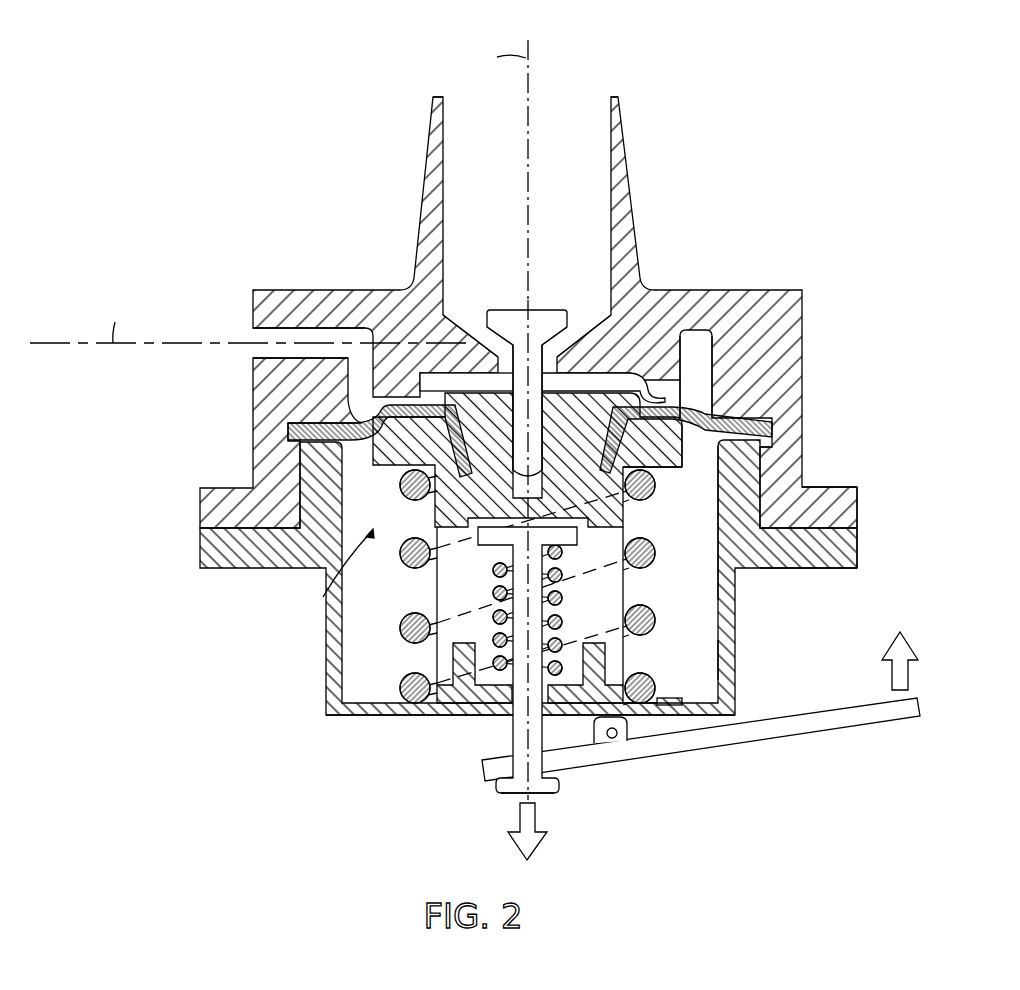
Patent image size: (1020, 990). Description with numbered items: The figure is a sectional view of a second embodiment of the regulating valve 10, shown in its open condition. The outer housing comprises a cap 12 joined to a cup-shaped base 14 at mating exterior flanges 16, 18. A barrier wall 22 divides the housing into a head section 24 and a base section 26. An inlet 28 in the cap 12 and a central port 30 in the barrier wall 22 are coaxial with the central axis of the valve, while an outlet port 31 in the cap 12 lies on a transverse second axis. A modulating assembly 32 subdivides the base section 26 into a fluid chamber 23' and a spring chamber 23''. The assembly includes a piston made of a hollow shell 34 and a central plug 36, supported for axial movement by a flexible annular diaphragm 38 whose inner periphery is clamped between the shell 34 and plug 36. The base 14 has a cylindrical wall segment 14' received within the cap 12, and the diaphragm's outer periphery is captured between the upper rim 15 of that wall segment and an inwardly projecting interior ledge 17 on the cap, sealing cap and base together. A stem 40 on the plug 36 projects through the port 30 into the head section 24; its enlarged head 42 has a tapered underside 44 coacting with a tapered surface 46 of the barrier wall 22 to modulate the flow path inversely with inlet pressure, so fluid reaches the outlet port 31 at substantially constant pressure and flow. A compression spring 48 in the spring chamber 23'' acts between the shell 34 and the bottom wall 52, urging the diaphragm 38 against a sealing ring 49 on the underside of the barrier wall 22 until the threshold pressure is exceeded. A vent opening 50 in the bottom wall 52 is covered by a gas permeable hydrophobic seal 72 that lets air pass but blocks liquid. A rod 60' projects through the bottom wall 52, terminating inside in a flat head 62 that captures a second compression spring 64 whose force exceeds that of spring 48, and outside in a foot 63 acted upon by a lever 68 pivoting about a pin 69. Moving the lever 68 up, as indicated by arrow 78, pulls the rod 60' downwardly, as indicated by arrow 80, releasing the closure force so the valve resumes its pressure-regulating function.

The regulating valve 10 is at (475, 450).
The cap 12 is at (555, 284).
The cup-shaped base 14 is at (555, 600).
The cylindrical wall segment 14' is at (699, 523).
The upper rim 15 is at (770, 443).
The exterior flange 16 is at (860, 510).
The interior ledge 17 is at (757, 418).
The exterior flange 18 is at (860, 550).
The barrier wall 22 is at (555, 284).
The fluid chamber 23' is at (698, 335).
The spring chamber 23'' is at (751, 660).
The head section 24 is at (554, 223).
The base section 26 is at (678, 556).
The inlet 28 is at (597, 97).
The central port 30 is at (483, 330).
The outlet port 31 is at (260, 348).
The modulating assembly 32 is at (330, 573).
The hollow shell 34 is at (668, 470).
The central plug 36 is at (541, 460).
The flexible annular diaphragm 38 is at (690, 410).
The stem 40 is at (515, 466).
The enlarged head 42 is at (527, 367).
The tapered underside 44 is at (556, 327).
The tapered surface 46 is at (576, 335).
The compression spring 48 is at (656, 617).
The sealing ring 49 is at (370, 410).
The vent opening 50 is at (672, 697).
The bottom wall 52 is at (362, 718).
The rod 60' is at (530, 692).
The flat head 62 is at (542, 662).
The foot 63 is at (558, 787).
The second compression spring 64 is at (497, 595).
The lever 68 is at (705, 740).
The pin 69 is at (597, 733).
The gas permeable hydrophobic seal 72 is at (690, 700).
The lever movement arrow 78 is at (897, 675).
The stem movement arrow 80 is at (532, 825).